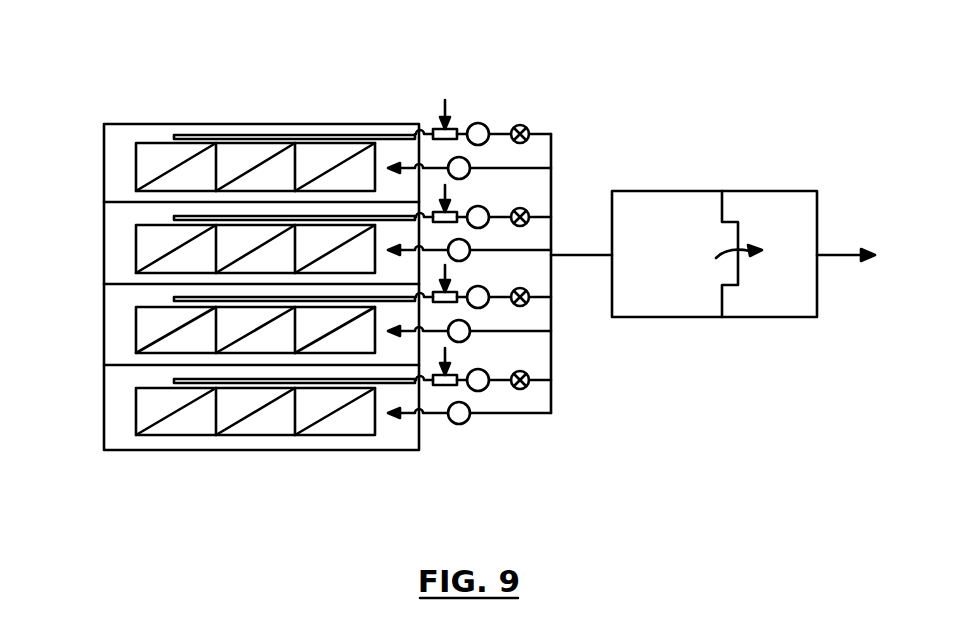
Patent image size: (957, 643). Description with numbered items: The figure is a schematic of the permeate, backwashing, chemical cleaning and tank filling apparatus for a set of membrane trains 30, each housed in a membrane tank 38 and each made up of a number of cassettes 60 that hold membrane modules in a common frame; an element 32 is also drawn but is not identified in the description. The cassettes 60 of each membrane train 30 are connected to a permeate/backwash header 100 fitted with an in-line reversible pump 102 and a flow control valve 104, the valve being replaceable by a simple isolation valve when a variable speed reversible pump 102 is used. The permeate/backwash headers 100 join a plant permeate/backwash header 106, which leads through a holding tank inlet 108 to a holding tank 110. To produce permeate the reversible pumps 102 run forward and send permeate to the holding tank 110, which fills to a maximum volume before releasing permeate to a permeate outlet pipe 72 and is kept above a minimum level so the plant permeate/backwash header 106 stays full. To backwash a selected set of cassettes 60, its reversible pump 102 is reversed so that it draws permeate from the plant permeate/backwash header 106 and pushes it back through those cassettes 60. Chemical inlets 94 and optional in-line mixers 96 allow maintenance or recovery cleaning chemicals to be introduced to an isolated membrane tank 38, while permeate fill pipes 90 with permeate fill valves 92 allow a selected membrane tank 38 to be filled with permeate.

The membrane tank 38 is at (120, 172).
The membrane train 30 is at (134, 329).
The divider 32 is at (118, 366).
The cassette 60 is at (158, 143).
The in-line mixer 96 is at (435, 128).
The chemical inlet 94 is at (445, 100).
The flow control valve 104 is at (490, 125).
The reversible pump 102 is at (518, 390).
The permeate fill valve 92 is at (468, 425).
The permeate fill pipe 90 is at (545, 414).
The permeate/backwash header 100 is at (548, 397).
The plant permeate/backwash header 106 is at (553, 355).
The holding tank inlet 108 is at (580, 255).
The holding tank 110 is at (697, 318).
The permeate outlet pipe 72 is at (836, 258).